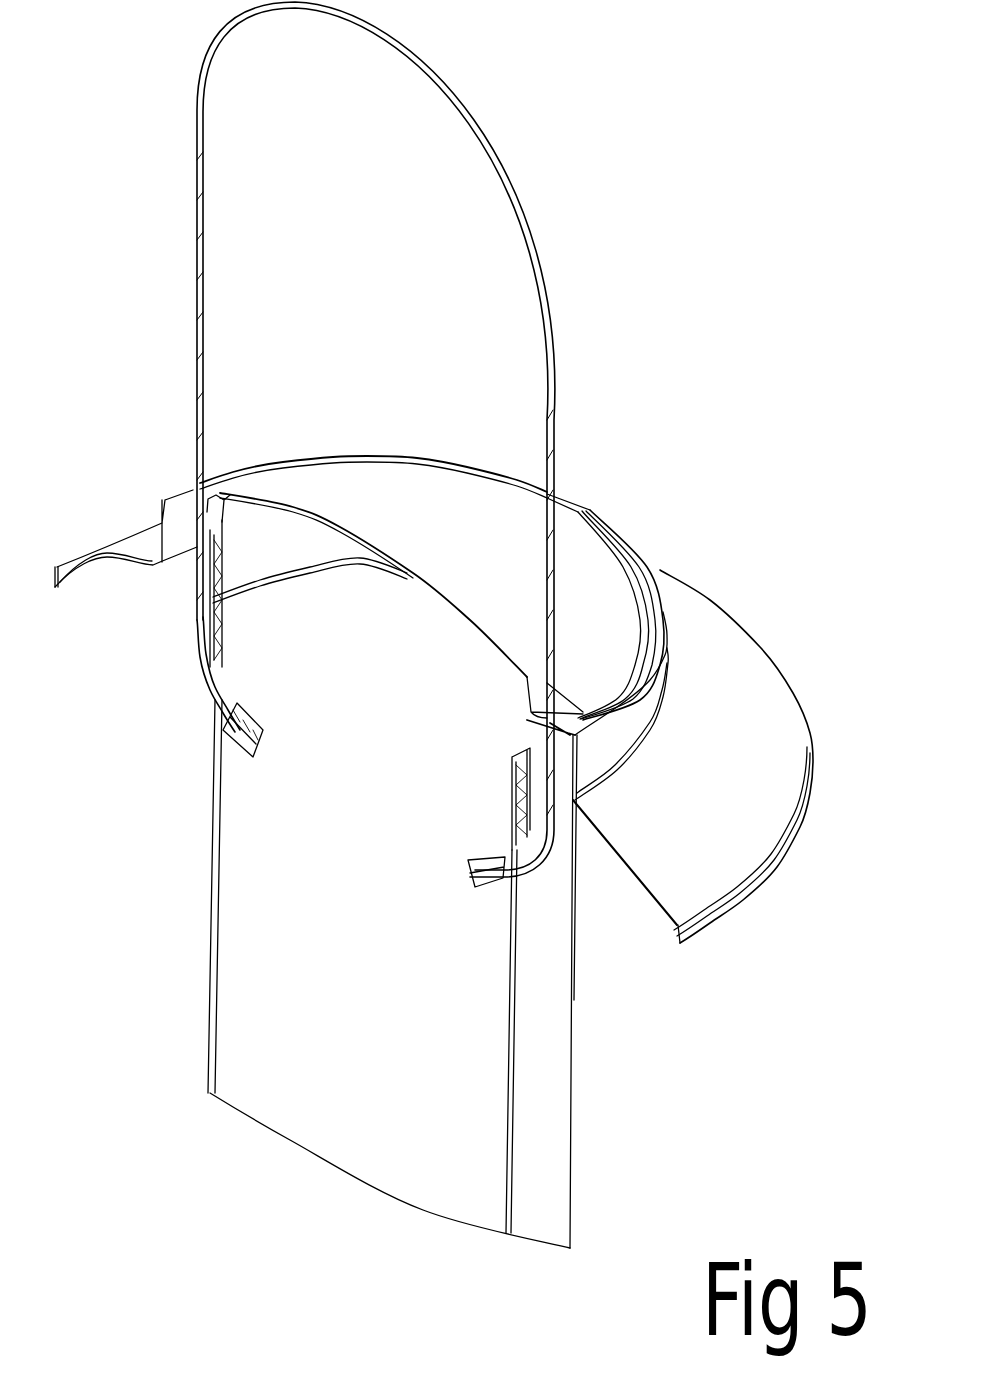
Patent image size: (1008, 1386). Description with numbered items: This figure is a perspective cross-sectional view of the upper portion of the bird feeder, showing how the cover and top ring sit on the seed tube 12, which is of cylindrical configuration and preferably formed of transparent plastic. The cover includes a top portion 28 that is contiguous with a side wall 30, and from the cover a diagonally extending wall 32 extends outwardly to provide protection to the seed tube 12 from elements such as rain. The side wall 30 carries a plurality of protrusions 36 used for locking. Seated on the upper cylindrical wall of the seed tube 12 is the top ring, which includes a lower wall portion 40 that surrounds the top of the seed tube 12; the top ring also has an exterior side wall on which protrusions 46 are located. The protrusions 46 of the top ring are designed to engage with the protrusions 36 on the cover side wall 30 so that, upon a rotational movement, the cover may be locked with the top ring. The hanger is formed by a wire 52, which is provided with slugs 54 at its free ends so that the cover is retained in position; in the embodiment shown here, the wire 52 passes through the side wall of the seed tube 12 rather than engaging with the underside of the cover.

The seed tube 12 is at (573, 1122).
The top portion 28 is at (465, 548).
The side wall 30 is at (640, 707).
The diagonally extending wall 32 is at (738, 794).
The protrusions 36 is at (213, 520).
The lower wall portion 40 is at (557, 793).
The protrusions 46 is at (205, 540).
The wire 52 is at (556, 462).
The slugs 54 is at (270, 738).